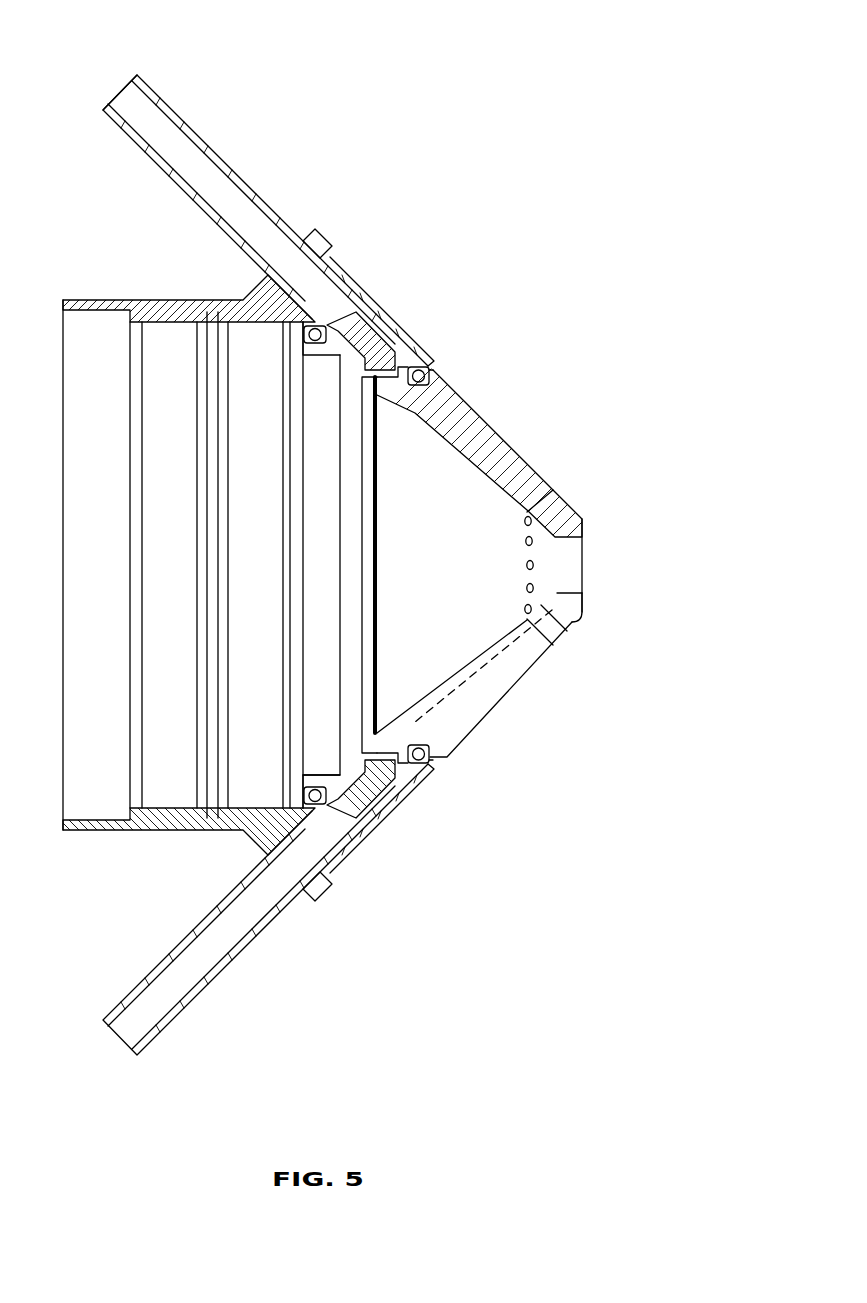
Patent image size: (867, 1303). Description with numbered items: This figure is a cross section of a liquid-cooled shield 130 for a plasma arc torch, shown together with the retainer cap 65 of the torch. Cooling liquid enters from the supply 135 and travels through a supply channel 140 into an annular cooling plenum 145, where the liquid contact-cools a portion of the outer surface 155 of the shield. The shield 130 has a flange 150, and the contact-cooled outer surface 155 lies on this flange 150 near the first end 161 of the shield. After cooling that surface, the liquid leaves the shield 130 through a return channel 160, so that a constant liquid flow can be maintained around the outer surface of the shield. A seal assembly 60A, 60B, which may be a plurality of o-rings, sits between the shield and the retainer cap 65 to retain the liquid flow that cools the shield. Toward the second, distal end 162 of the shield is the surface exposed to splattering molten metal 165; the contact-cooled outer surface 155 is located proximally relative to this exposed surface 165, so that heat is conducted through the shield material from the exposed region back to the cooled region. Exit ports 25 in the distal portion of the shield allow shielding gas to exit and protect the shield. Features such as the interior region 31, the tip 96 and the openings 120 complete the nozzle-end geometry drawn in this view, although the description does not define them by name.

The supply 135 is at (104, 81).
The supply channel 140 is at (172, 150).
The retainer cap 65 is at (90, 292).
The seal assembly 60A is at (247, 297).
The flange 150 is at (347, 349).
The outer surface 155 is at (363, 353).
The annular cooling plenum 145 is at (398, 350).
The seal assembly 60B is at (433, 368).
The surface exposed to splattering molten metal 165 is at (555, 407).
The first end 161 is at (278, 338).
The nozzle holes 120 is at (550, 483).
The interior chamber 31 is at (445, 557).
The nozzle tip 96 is at (578, 570).
The exit ports 25 is at (492, 588).
The second end 162 is at (642, 608).
The shield 130 is at (470, 690).
The return channel 160 is at (193, 980).